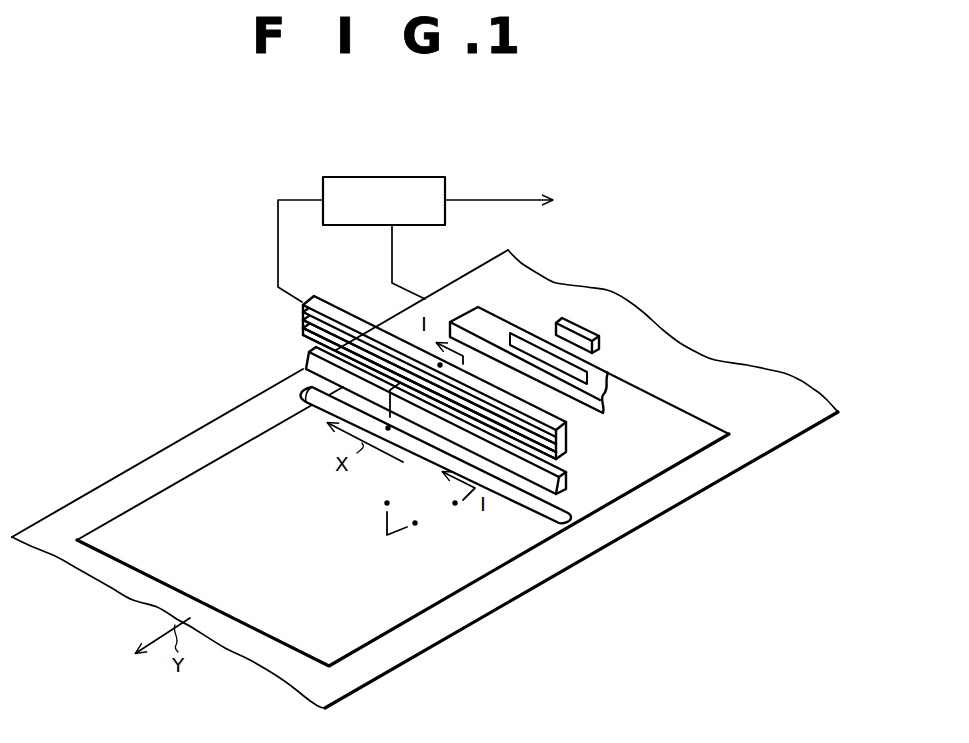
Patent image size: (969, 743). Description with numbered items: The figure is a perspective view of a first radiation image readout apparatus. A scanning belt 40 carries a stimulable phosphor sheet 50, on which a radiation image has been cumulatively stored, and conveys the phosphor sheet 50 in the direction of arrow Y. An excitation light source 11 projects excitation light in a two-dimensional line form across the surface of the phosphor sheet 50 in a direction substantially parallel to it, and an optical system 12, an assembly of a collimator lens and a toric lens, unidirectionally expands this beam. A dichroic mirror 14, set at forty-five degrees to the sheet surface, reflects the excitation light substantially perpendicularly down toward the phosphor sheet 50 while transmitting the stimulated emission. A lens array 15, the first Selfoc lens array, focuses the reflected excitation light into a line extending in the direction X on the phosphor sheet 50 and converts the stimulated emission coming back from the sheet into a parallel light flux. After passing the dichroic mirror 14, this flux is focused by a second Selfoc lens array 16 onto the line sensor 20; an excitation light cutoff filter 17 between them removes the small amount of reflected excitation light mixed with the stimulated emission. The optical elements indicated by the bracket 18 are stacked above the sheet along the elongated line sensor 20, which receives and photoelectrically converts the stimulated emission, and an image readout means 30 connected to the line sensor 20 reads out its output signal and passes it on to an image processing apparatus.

The excitation light source 11 is at (558, 322).
The optical system 12 is at (612, 387).
The dichroic mirror 14 is at (570, 480).
The lens array 15 is at (568, 513).
The second Selfoc lens array 16 is at (567, 454).
The excitation light cutoff filter 17 is at (566, 442).
The illumination unit 18 is at (693, 515).
The line sensor 20 is at (330, 303).
The image readout means 30 is at (386, 177).
The scanning belt 40 is at (737, 377).
The stimulable phosphor sheet 50 is at (407, 607).